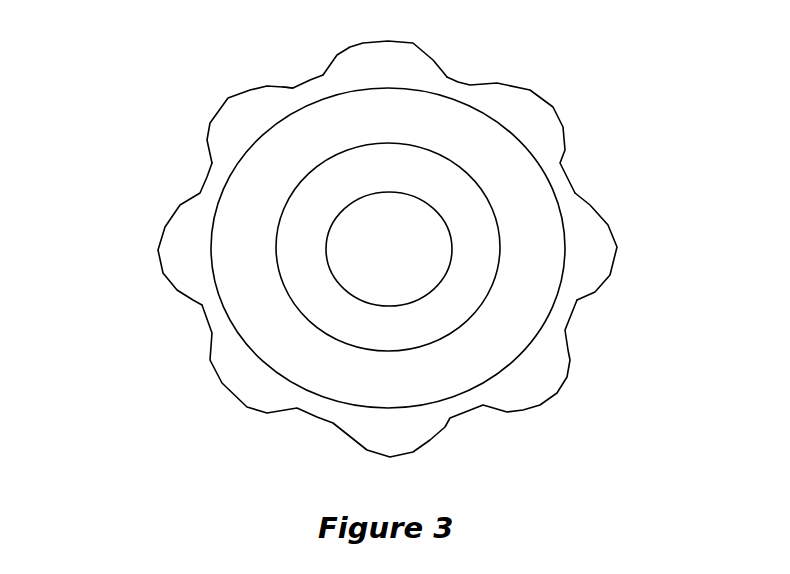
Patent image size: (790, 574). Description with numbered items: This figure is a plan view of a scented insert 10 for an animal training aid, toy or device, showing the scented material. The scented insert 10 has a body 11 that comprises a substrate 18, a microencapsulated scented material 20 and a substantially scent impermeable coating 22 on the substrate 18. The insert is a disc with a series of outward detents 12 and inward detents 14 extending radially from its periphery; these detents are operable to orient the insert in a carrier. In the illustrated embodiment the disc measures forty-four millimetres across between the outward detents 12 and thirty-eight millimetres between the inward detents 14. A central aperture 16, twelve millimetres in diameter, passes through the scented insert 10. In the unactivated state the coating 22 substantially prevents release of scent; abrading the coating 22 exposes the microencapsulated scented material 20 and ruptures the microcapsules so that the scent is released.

The scented insert 10 is at (160, 84).
The body 11 is at (387, 70).
The outward detent 12 is at (230, 100).
The inward detent 14 is at (310, 82).
The aperture 16 is at (360, 266).
The substrate 18 is at (597, 248).
The microencapsulated scented material 20 is at (438, 130).
The scent impermeable coating 22 is at (533, 303).